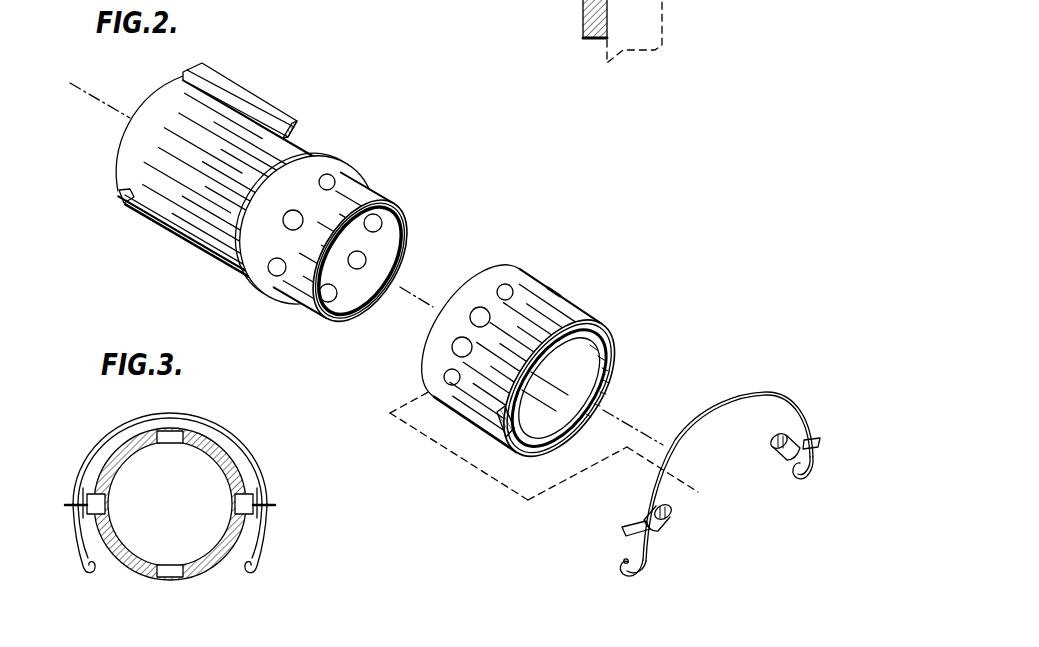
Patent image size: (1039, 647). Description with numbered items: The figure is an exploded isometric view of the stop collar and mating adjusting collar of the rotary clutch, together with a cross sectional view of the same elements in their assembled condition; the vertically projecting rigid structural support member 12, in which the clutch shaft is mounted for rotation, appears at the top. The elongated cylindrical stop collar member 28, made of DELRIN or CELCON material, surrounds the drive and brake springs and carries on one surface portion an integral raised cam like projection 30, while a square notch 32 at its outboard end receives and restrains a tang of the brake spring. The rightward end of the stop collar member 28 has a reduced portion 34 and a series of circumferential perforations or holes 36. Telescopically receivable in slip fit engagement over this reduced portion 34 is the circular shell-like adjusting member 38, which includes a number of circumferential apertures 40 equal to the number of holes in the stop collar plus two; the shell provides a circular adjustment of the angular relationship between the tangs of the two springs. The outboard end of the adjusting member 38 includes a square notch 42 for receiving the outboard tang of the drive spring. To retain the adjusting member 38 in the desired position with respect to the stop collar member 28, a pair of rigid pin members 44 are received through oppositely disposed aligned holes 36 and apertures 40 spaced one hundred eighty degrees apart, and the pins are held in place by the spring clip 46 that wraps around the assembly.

In FIG. 2, the rigid structural support member 12 is at (603, 34).
In FIG. 2, the stop collar member 28 is at (248, 199).
In FIG. 2, the raised cam like projection 30 is at (258, 109).
In FIG. 2, the square notch 32 is at (120, 192).
In FIG. 2, the reduced portion 34 is at (370, 199).
In FIG. 2, the holes 36 is at (347, 187).
In FIG. 2, the adjusting member 38 is at (523, 360).
In FIG. 2, the circumferential apertures 40 is at (513, 292).
In FIG. 2, the square notch 42 is at (504, 437).
In FIG. 2, the rigid pin members 44 is at (771, 455).
In FIG. 3, the rigid pin members 44 is at (92, 504).
In FIG. 2, the spring clip 46 is at (723, 410).
In FIG. 3, the spring clip 46 is at (250, 460).